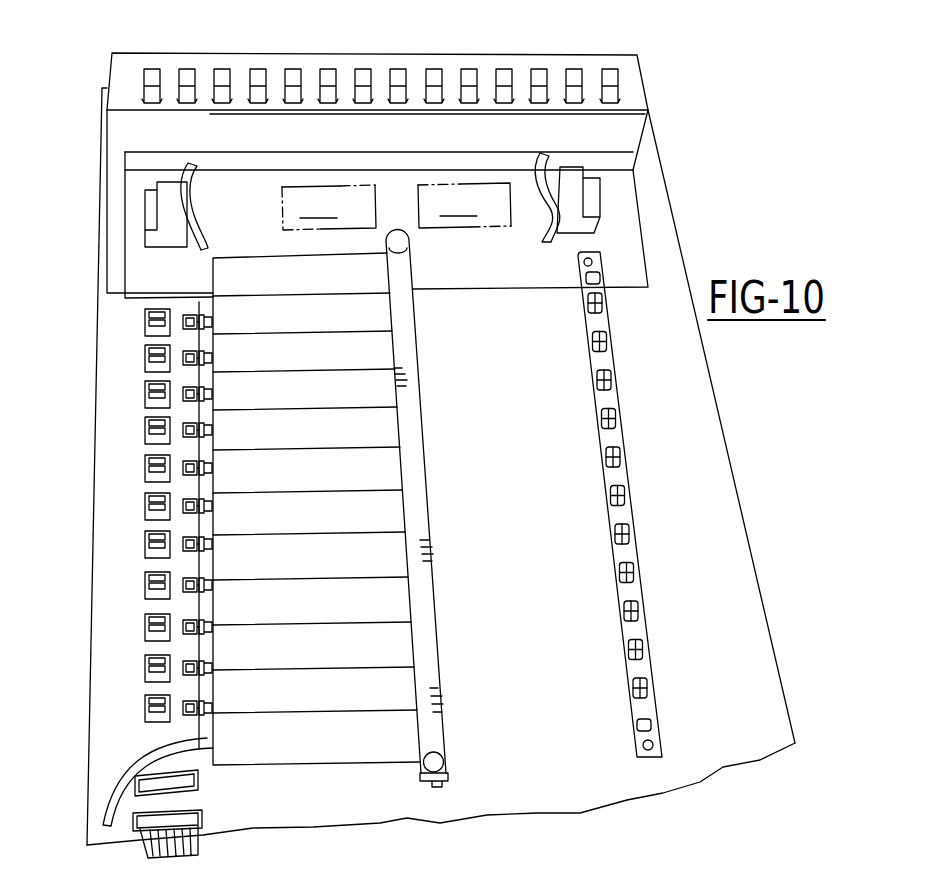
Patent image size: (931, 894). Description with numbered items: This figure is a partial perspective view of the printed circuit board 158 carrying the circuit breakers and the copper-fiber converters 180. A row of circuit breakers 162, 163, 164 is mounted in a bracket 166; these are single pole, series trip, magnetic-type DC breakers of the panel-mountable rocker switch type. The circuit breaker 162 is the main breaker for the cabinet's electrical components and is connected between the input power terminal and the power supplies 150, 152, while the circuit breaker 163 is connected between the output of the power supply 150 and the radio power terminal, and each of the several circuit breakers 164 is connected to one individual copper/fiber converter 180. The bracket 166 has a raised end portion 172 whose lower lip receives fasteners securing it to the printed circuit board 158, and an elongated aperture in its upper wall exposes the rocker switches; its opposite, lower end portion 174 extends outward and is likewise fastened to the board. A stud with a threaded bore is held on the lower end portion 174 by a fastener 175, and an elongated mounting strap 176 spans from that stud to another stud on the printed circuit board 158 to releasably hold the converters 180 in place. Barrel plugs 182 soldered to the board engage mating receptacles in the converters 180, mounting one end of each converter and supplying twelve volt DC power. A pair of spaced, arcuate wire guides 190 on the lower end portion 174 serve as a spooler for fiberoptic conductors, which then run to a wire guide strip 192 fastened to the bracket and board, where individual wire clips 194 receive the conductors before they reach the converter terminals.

The power supply 150 is at (464, 205).
The power supply 152 is at (329, 207).
The printed circuit board 158 is at (607, 765).
The circuit breaker 162 is at (620, 72).
The circuit breaker 163 is at (574, 64).
The circuit breakers 164 is at (257, 67).
The bracket 166 is at (113, 54).
The raised end portion 172 is at (628, 137).
The lower end portion 174 is at (637, 247).
The fastener 175 is at (447, 782).
The mounting strap 176 is at (428, 518).
The copper/fiber converter 180 is at (378, 347).
The barrel plug 182 is at (210, 300).
The arcuate wire guide 190 is at (163, 210).
The wire guide strip 192 is at (632, 507).
The wire clip 194 is at (615, 380).